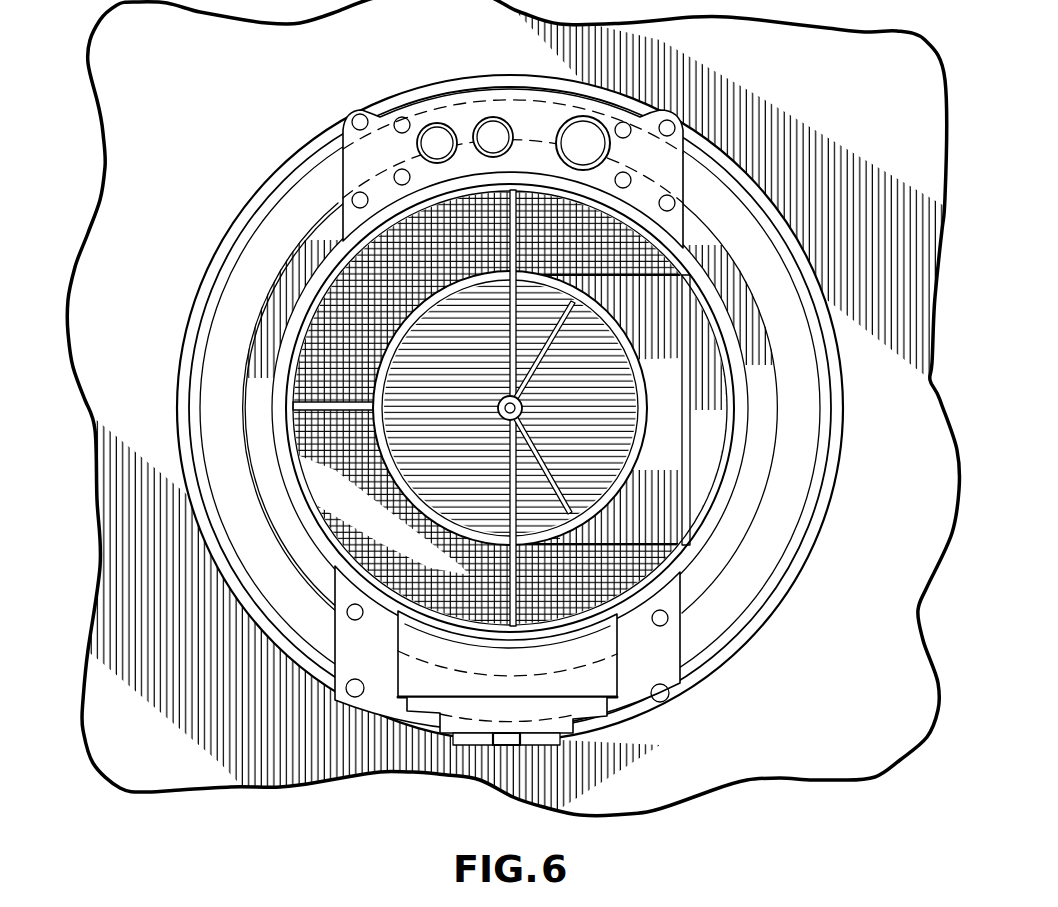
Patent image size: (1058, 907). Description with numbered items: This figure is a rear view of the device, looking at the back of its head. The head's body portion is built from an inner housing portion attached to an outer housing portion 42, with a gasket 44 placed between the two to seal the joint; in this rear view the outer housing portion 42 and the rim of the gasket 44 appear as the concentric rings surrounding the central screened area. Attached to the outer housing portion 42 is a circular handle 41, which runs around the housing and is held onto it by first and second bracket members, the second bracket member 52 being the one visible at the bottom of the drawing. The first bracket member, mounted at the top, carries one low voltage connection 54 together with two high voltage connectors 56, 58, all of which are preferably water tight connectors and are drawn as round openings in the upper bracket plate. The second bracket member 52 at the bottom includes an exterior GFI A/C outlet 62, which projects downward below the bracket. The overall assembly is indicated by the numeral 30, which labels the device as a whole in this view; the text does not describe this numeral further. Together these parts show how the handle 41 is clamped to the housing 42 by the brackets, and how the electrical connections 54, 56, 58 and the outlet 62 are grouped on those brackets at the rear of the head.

The dryer door assembly 30 is at (200, 98).
The circular handle 41 is at (205, 340).
The outer housing portion 42 is at (242, 218).
The gasket 44 is at (272, 174).
The second bracket member 52 is at (648, 705).
The low voltage connection 54 is at (579, 116).
The high voltage connector 56 is at (491, 117).
The high voltage connector 58 is at (434, 123).
The exterior GFI A/C outlet 62 is at (540, 746).